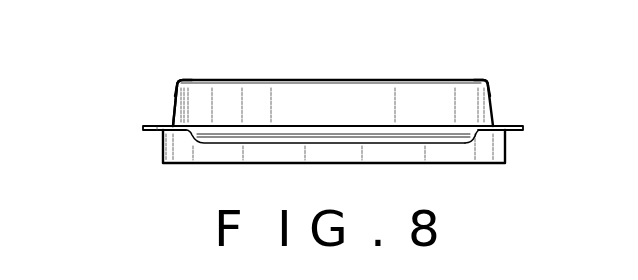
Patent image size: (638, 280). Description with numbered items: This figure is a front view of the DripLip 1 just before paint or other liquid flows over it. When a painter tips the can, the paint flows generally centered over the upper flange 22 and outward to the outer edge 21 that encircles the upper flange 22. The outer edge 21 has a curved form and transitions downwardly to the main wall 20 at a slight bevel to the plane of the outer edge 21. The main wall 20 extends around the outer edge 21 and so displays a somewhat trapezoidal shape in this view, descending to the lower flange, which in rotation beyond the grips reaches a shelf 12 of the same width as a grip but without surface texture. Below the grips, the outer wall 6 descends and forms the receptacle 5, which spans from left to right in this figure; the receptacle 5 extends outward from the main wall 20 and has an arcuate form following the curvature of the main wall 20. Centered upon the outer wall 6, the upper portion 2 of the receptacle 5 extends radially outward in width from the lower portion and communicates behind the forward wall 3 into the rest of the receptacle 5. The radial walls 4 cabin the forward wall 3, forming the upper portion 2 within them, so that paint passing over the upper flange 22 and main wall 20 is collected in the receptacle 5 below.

The DripLip 1 is at (104, 62).
The upper portion 2 is at (227, 126).
The forward wall 3 is at (218, 133).
The radial walls 4 is at (466, 137).
The receptacle 5 is at (186, 126).
The outer wall 6 is at (440, 150).
The shelf 12 is at (141, 125).
The main wall 20 is at (417, 98).
The outer edge 21 is at (488, 81).
The upper flange 22 is at (179, 80).